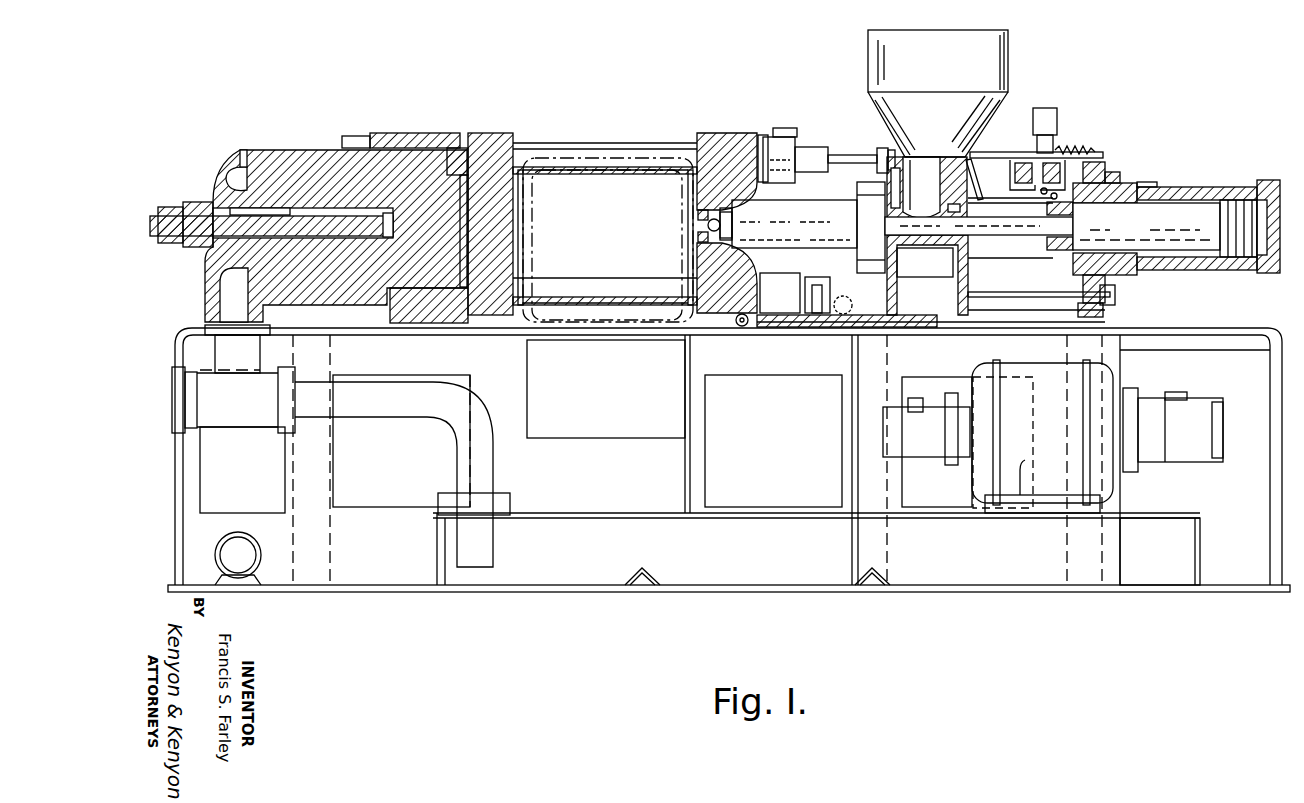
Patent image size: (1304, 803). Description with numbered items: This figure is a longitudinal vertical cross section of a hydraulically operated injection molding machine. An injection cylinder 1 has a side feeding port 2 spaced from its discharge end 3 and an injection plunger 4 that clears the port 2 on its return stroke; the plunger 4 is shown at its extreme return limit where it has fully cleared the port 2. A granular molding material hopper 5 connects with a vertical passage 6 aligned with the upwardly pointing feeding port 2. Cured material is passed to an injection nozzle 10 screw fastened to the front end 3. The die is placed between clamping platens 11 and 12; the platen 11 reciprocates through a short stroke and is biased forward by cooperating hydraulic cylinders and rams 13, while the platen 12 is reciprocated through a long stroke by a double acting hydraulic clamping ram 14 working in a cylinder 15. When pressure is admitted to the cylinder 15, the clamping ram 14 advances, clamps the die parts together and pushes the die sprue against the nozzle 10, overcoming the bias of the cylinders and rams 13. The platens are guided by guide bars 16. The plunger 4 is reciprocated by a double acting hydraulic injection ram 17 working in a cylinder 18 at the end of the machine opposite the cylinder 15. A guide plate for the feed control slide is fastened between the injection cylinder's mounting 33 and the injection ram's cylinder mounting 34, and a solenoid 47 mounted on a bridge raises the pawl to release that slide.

The injection cylinder 1 is at (814, 213).
The side feeding port 2 is at (927, 188).
The discharge end 3 is at (700, 246).
The injection plunger 4 is at (1012, 236).
The granular molding material hopper 5 is at (875, 59).
The vertical passage 6 is at (938, 158).
The injection nozzle 10 is at (698, 221).
The clamping platen 11 is at (696, 137).
The clamping platen 12 is at (516, 140).
The cooperating hydraulic cylinders and rams 13 is at (797, 140).
The clamping ram 14 is at (284, 170).
The cylinder 15 is at (326, 148).
The guide bars 16 is at (609, 278).
The injection ram 17 is at (1216, 206).
The cylinder 18 is at (1183, 271).
The injection cylinder's mounting 33 is at (969, 153).
The injection ram's cylinder mounting 34 is at (1107, 165).
The solenoid 47 is at (1058, 120).